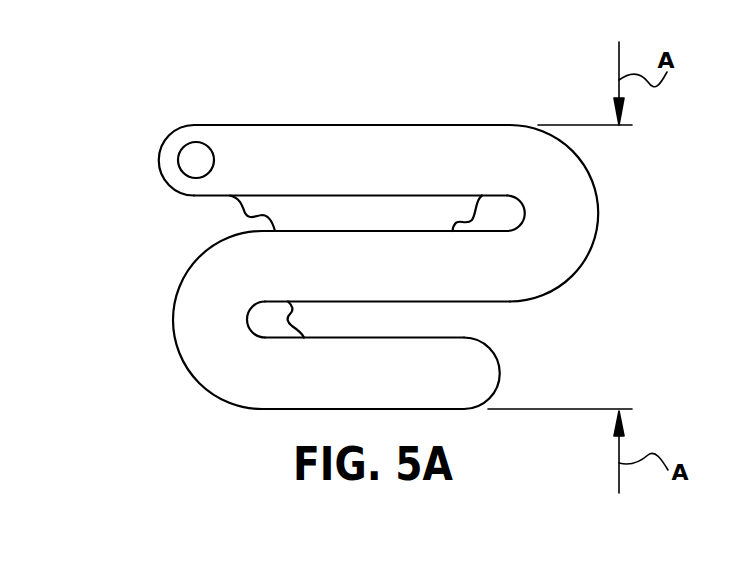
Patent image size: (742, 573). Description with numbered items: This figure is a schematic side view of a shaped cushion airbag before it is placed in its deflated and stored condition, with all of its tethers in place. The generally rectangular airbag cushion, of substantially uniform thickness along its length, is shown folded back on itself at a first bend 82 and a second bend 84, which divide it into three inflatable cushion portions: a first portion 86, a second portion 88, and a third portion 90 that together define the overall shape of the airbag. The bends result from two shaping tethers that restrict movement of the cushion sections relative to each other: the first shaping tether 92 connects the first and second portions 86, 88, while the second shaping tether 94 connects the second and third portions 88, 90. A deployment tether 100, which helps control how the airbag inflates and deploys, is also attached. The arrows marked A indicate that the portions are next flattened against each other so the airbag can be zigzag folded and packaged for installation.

The first bend 82 is at (550, 230).
The second bend 84 is at (188, 318).
The first cushion portion 86 is at (345, 145).
The second cushion portion 88 is at (403, 280).
The third cushion portion 90 is at (291, 372).
The first shaping tether 92 is at (473, 207).
The second shaping tether 94 is at (293, 318).
The deployment tether 100 is at (238, 209).